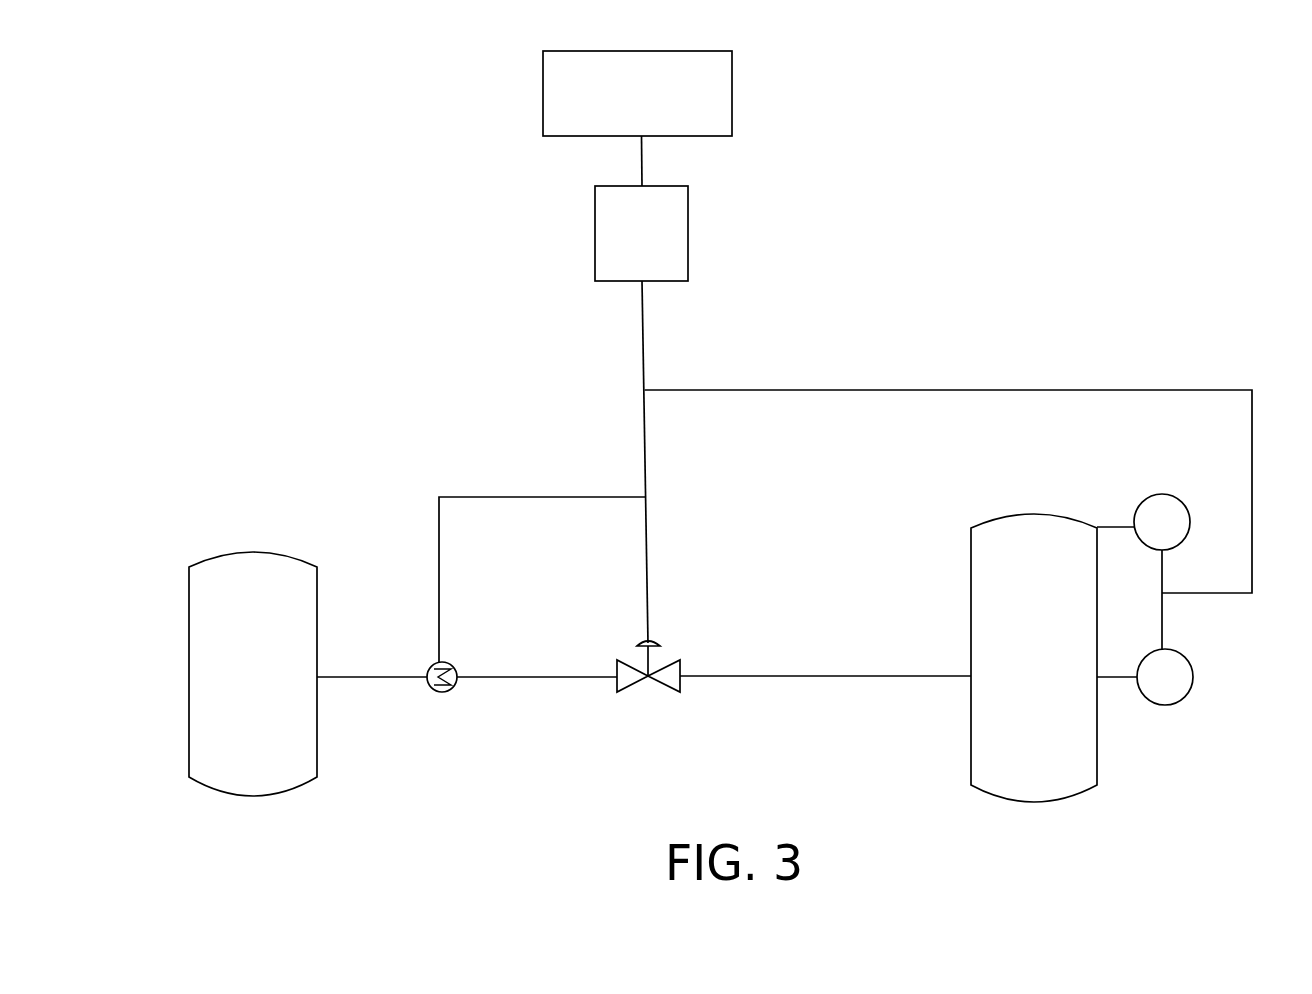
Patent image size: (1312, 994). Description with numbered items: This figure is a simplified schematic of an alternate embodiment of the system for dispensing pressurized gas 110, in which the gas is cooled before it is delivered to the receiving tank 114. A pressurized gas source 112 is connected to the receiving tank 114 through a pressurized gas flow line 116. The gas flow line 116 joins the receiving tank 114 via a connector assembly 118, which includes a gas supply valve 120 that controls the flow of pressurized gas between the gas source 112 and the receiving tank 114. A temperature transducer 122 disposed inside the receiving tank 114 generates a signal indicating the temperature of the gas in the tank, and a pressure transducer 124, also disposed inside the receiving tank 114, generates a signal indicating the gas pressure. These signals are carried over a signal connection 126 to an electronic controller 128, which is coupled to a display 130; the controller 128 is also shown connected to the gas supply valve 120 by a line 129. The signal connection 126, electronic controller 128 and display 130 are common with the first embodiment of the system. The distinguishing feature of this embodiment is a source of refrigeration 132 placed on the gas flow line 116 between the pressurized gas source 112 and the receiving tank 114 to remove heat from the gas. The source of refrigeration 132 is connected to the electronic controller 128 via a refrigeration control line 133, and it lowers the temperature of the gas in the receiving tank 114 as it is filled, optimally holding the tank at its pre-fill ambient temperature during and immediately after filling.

The system for dispensing pressurized gas 110 is at (940, 192).
The pressurized gas source 112 is at (270, 552).
The receiving tank 114 is at (1097, 757).
The pressurized gas flow line 116 is at (498, 677).
The connector assembly 118 is at (845, 676).
The gas supply valve 120 is at (648, 692).
The temperature transducer 122 is at (1187, 697).
The pressure transducer 124 is at (1160, 494).
The signal connection 126 is at (1000, 390).
The electronic controller 128 is at (595, 242).
The valve control line 129 is at (648, 557).
The display 130 is at (543, 95).
The source of refrigeration 132 is at (456, 668).
The refrigeration control line 133 is at (463, 497).